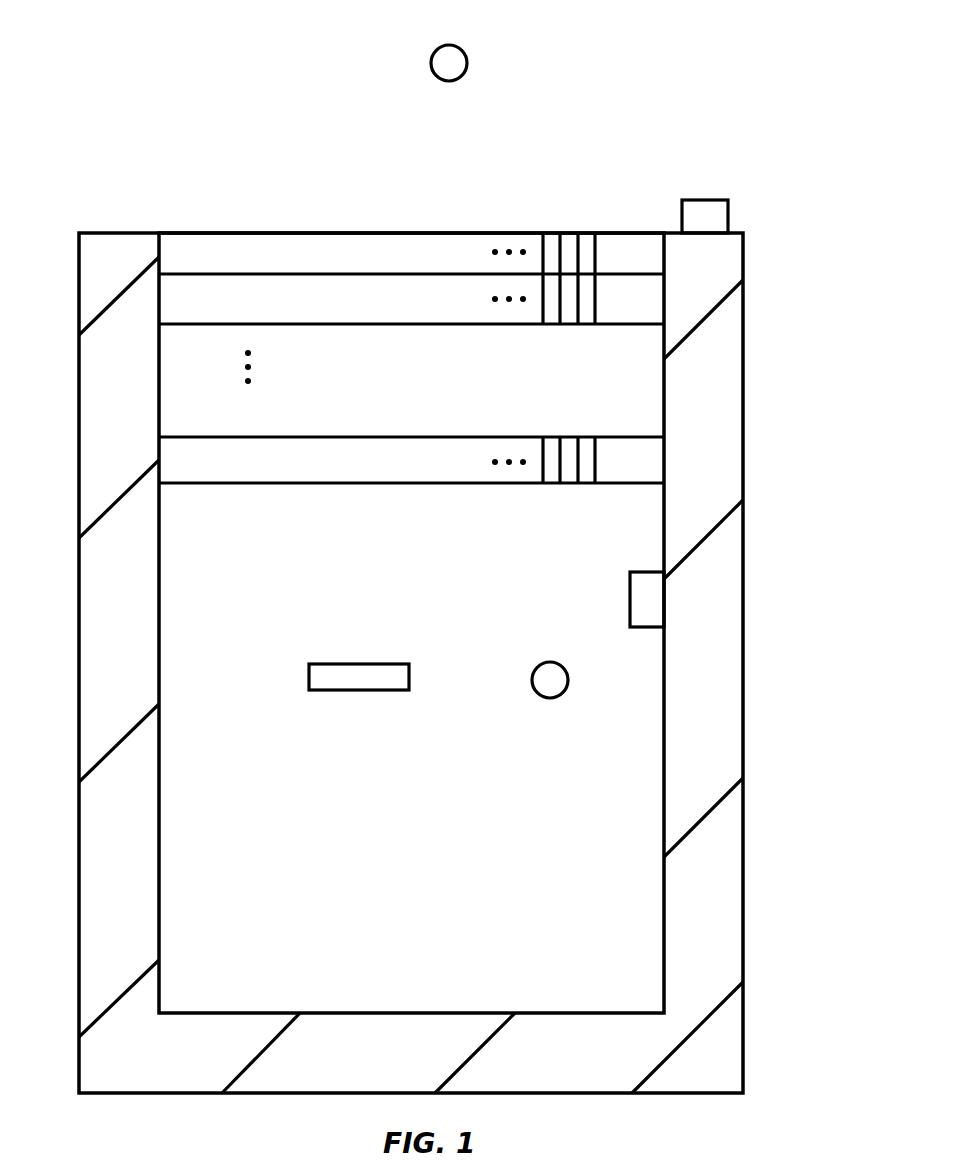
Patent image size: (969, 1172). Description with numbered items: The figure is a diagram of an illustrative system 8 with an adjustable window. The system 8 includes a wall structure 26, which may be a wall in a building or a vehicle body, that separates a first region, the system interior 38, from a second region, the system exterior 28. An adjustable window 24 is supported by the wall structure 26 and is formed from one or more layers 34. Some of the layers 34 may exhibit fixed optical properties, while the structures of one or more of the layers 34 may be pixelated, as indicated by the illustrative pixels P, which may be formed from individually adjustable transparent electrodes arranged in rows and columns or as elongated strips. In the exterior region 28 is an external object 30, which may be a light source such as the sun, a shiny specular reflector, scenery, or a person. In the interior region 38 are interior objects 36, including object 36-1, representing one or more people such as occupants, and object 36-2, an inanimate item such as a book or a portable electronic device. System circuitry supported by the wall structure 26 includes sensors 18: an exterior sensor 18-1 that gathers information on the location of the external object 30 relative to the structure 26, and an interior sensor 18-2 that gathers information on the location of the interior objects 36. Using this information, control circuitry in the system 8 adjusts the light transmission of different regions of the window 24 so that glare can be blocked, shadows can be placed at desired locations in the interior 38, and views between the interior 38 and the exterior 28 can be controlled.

The system 8 is at (795, 1107).
The sensors 18 is at (679, 373).
The exterior sensor 18-1 is at (728, 218).
The interior sensor 18-2 is at (634, 600).
The adjustable window 24 is at (196, 217).
The wall structure 26 is at (91, 288).
The system exterior 28 is at (136, 112).
The external object 30 is at (467, 64).
The layers 34 is at (282, 282).
The interior objects 36 is at (480, 688).
The object 36-1 is at (592, 679).
The object 36-2 is at (327, 675).
The system interior 38 is at (174, 852).
The pixels P is at (587, 238).